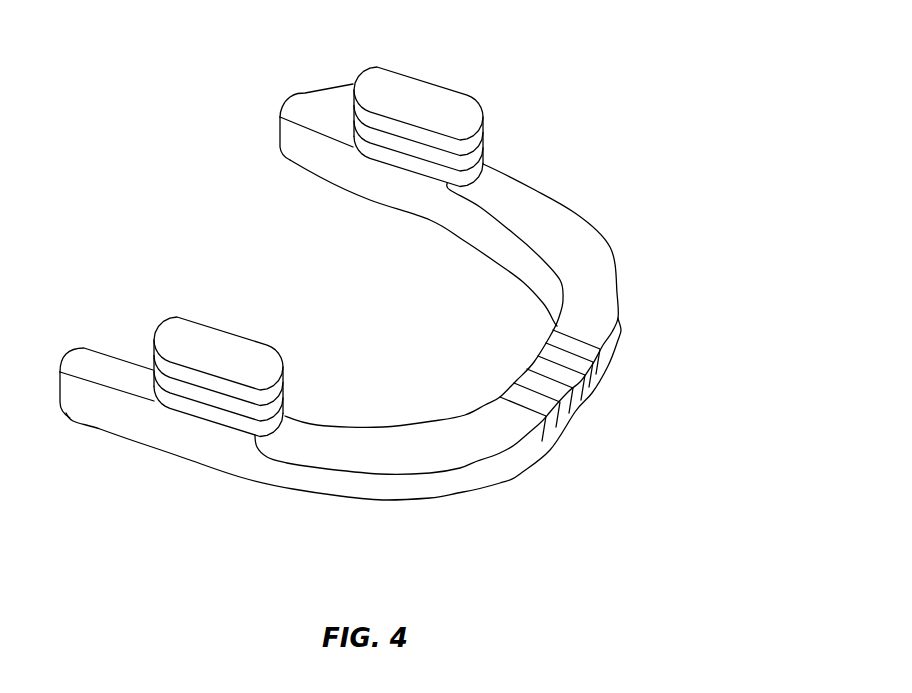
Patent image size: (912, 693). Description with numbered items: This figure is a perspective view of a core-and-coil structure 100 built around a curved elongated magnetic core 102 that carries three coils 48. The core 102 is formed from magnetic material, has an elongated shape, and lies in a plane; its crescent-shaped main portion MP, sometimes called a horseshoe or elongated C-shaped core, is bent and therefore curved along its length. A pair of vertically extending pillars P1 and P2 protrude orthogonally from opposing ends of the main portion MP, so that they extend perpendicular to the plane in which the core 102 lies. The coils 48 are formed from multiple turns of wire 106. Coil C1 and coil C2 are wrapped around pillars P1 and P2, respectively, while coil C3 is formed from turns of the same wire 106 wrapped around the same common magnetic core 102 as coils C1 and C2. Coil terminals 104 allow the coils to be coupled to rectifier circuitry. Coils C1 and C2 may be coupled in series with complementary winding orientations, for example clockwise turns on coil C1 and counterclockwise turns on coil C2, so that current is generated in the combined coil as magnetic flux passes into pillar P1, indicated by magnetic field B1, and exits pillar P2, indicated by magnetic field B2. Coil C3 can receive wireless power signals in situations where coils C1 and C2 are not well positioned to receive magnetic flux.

The head-mounted device band assembly 100 is at (393, 317).
The core 102 is at (384, 489).
The coil terminals 104 is at (483, 125).
The wire 106 is at (576, 334).
The coils 48 is at (499, 101).
The pillar P1 is at (160, 320).
The pillar P2 is at (457, 100).
The magnetic field B1 is at (198, 323).
The magnetic field B2 is at (440, 97).
The coil C1 is at (293, 357).
The coil C2 is at (342, 90).
The coil C3 is at (508, 347).
The crescent-shaped main portion MP is at (466, 482).